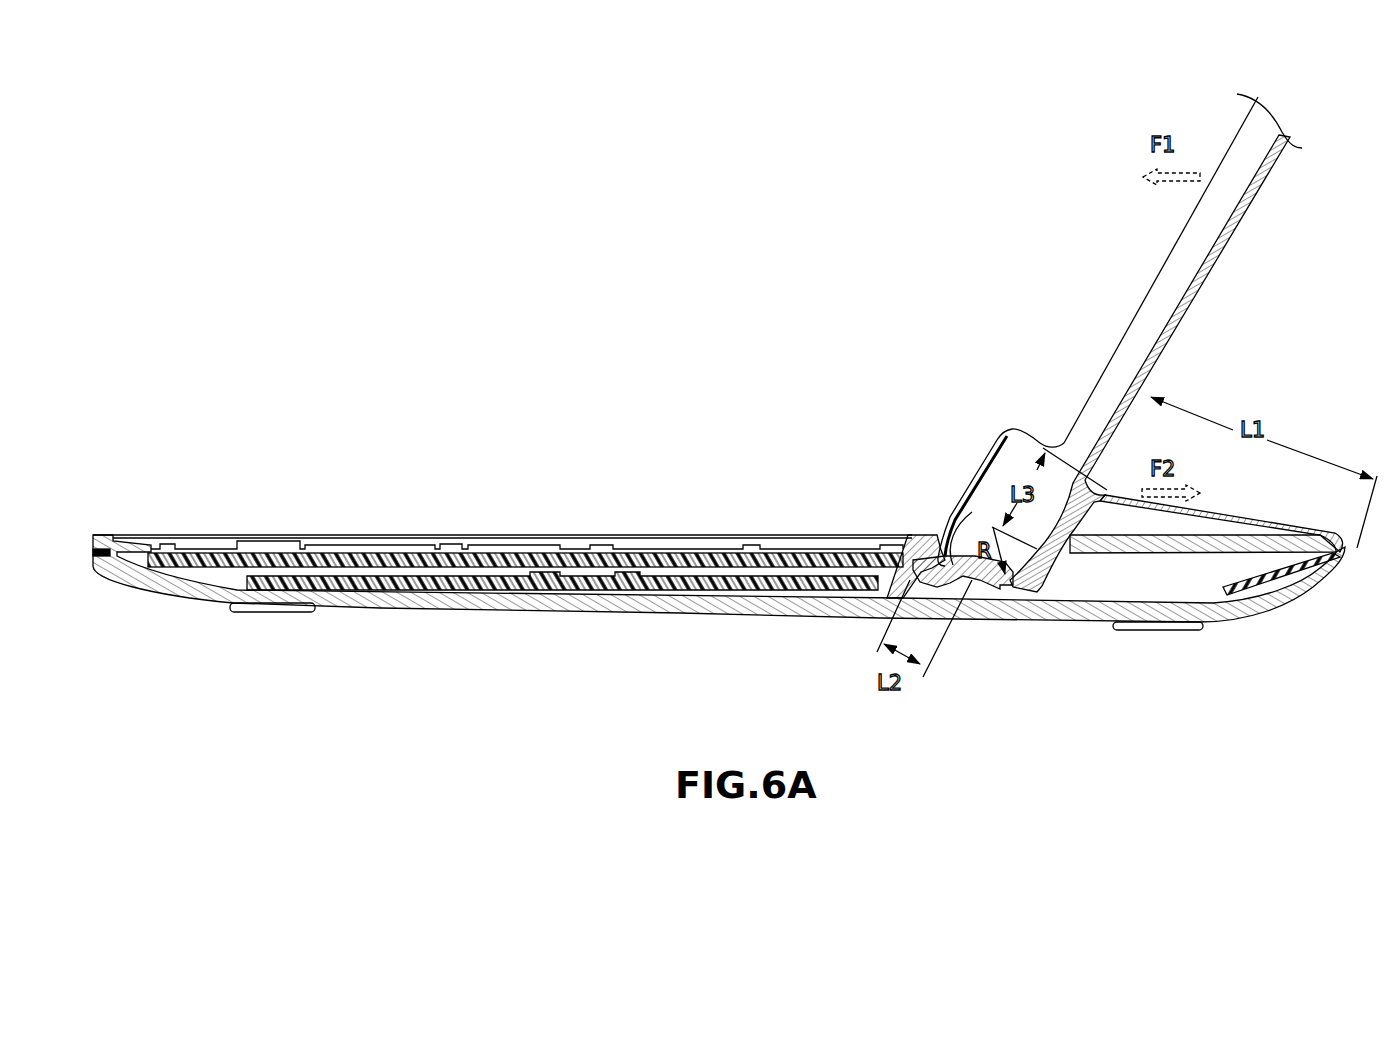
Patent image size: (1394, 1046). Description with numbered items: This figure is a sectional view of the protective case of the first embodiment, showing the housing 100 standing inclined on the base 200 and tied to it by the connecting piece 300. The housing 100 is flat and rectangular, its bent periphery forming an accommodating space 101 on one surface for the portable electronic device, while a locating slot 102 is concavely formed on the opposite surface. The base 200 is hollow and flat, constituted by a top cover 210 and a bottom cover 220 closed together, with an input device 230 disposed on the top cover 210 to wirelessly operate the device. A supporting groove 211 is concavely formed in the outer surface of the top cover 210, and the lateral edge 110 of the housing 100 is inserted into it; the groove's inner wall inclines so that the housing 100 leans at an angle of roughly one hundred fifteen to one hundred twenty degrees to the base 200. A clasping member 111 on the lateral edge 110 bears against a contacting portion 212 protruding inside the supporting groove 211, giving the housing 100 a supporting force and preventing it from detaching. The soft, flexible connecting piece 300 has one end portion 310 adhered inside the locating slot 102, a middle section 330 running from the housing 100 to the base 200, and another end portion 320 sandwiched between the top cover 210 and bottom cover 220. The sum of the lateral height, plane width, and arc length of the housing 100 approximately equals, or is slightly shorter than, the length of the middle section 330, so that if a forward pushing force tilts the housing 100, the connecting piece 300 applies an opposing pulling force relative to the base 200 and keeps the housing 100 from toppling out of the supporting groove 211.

The housing 100 is at (1141, 393).
The accommodating space 101 is at (1127, 334).
The locating slot 102 is at (1095, 505).
The lateral edge 110 is at (988, 588).
The clasping member 111 is at (942, 568).
The base 200 is at (719, 599).
The top cover 210 is at (1207, 540).
The supporting groove 211 is at (1003, 601).
The contacting portion 212 is at (903, 535).
The bottom cover 220 is at (1092, 613).
The input device 230 is at (414, 550).
The connecting piece 300 is at (1182, 398).
The end portion 310 is at (1172, 351).
The end portion 320 is at (1255, 582).
The middle section 330 is at (1253, 517).